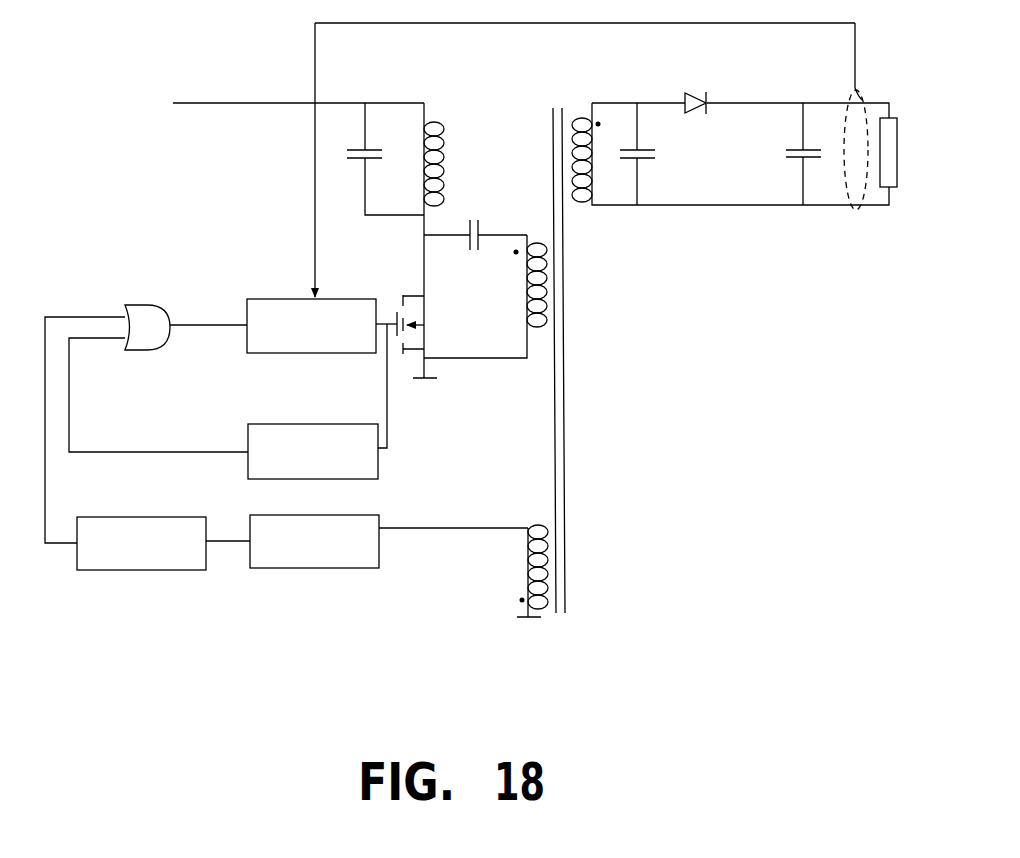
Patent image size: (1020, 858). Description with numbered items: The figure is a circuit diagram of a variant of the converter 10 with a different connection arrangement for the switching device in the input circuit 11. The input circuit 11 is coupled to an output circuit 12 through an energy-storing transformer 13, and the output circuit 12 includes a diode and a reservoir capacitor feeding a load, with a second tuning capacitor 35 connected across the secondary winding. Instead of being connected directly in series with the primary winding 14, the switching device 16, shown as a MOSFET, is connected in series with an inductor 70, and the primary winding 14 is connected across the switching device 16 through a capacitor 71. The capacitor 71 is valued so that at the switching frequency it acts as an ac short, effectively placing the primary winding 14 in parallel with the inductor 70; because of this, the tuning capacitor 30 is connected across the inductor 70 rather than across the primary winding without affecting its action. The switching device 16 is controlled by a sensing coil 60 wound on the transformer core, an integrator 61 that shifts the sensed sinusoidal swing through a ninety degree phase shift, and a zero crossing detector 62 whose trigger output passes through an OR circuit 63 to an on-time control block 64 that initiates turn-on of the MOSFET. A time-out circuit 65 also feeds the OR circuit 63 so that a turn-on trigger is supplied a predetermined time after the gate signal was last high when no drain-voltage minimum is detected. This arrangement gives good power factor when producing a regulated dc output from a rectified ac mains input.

The flyback converter 10 is at (262, 75).
The input circuit 11 is at (257, 184).
The output circuit 12 is at (735, 167).
The energy-storing transformer 13 is at (585, 212).
The primary winding 14 is at (527, 290).
The switching device 16 is at (397, 315).
The tuning capacitor 30 is at (362, 160).
The second tuning capacitor 35 is at (641, 161).
The sensing coil 60 is at (543, 543).
The integrator 61 is at (357, 572).
The zero crossing detector 62 is at (188, 572).
The OR circuit 63 is at (152, 342).
The on-time control block 64 is at (283, 355).
The time-out circuit 65 is at (308, 423).
The inductor 70 is at (443, 152).
The capacitor 71 is at (478, 228).